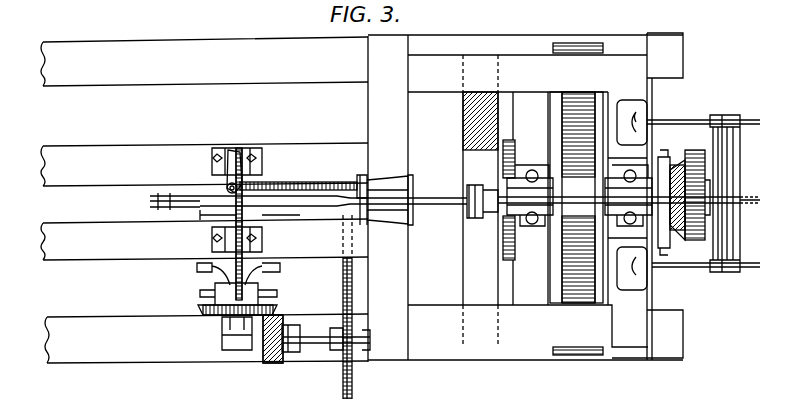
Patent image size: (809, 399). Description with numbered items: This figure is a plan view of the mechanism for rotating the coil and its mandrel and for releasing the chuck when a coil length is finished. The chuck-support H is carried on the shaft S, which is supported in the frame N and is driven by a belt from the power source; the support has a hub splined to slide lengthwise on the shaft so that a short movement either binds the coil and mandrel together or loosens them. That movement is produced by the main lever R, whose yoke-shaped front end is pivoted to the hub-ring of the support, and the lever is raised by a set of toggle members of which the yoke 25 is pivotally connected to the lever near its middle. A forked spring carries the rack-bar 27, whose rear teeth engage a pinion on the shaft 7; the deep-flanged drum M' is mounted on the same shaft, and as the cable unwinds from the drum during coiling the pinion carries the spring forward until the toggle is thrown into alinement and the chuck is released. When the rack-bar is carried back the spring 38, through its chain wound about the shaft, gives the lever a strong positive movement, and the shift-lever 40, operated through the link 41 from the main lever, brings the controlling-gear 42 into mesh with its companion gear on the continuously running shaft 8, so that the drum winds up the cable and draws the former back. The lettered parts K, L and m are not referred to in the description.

The link 41 is at (212, 173).
The rack-bar 27 is at (298, 180).
The deep-flanged drum M' is at (152, 205).
The spring 38 is at (200, 215).
The shift-lever 40 is at (215, 279).
The controlling-gear 42 is at (200, 310).
The shaft 7 is at (222, 330).
The shaft 8 is at (318, 345).
The toggle yoke 25 is at (464, 190).
The shaft S is at (555, 177).
The main lever R is at (575, 150).
The shaft L is at (693, 130).
The bracket K is at (740, 160).
The main shaft m is at (483, 201).
The chuck-support H is at (700, 240).
The frame N is at (587, 330).